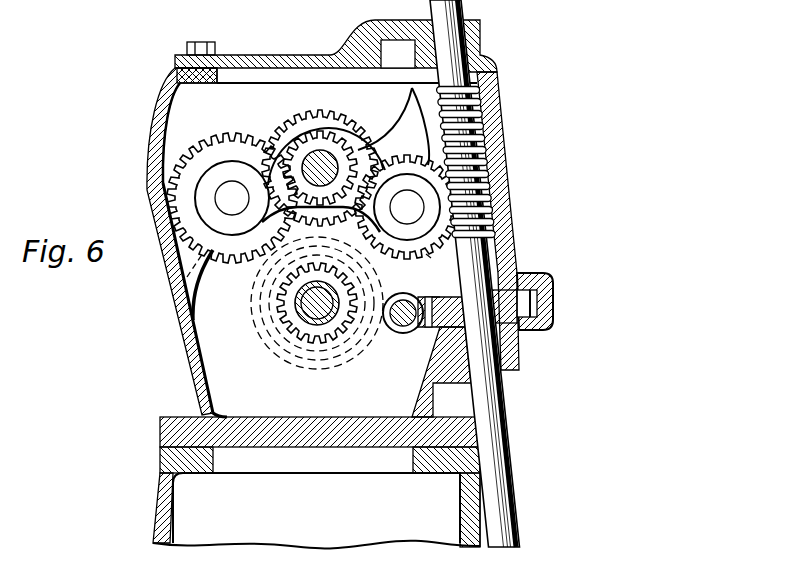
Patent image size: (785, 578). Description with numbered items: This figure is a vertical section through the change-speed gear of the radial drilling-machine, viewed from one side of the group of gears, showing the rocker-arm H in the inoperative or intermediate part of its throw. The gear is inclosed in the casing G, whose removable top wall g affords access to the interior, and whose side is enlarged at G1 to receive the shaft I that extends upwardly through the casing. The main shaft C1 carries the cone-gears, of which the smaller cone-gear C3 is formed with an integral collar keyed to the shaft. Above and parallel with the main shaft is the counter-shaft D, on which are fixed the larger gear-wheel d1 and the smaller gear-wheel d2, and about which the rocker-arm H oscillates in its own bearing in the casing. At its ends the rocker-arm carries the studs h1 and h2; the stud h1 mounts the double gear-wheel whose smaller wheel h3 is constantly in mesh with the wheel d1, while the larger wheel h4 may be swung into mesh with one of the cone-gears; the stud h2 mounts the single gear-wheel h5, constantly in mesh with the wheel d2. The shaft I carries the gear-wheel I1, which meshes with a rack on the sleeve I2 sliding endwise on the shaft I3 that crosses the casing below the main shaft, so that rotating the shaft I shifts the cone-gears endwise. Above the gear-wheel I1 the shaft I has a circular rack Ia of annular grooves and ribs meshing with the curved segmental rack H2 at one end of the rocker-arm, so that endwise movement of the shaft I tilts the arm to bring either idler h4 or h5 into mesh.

The casing G is at (150, 145).
The top wall g is at (283, 58).
The extended part of casing G1 is at (504, 148).
The shaft I is at (503, 413).
The circular rack Ia is at (480, 203).
The gear-wheel I1 is at (532, 312).
The rack-sleeve I2 is at (393, 333).
The shaft I3 is at (413, 330).
The rocker-arm H is at (300, 186).
The curved segmental rack H2 is at (402, 86).
The stud h1 is at (407, 207).
The stud h2 is at (232, 198).
The smaller gear-wheel h3 is at (436, 297).
The larger gear-wheel h4 is at (428, 256).
The single gear-wheel h5 is at (232, 250).
The counter-shaft D is at (303, 158).
The larger gear-wheel d1 is at (343, 124).
The smaller gear-wheel d2 is at (334, 130).
The main shaft C1 is at (297, 320).
The smaller cone-gear C3 is at (323, 340).